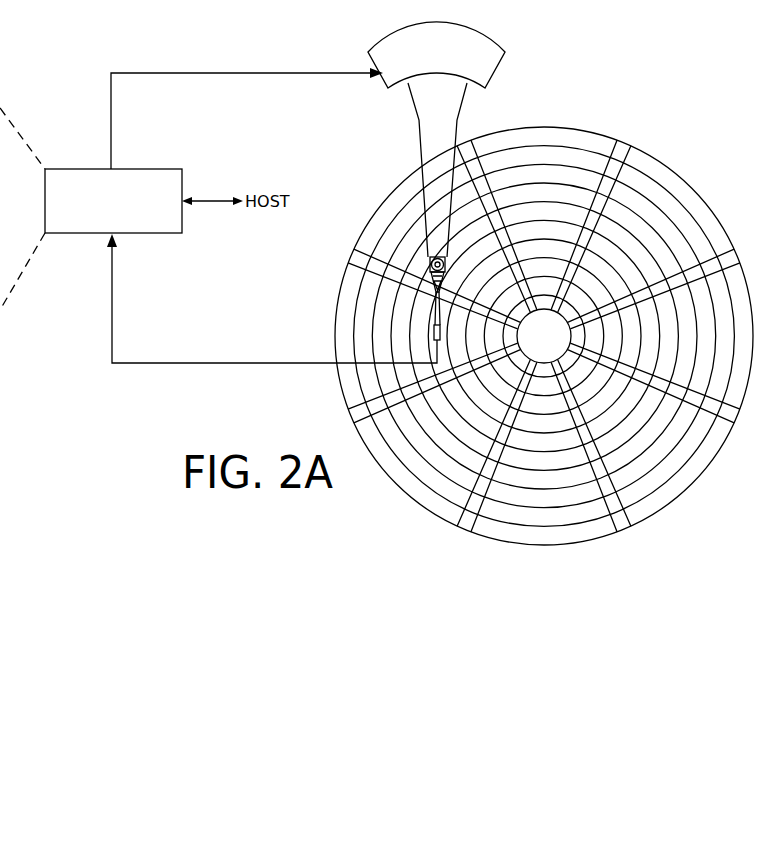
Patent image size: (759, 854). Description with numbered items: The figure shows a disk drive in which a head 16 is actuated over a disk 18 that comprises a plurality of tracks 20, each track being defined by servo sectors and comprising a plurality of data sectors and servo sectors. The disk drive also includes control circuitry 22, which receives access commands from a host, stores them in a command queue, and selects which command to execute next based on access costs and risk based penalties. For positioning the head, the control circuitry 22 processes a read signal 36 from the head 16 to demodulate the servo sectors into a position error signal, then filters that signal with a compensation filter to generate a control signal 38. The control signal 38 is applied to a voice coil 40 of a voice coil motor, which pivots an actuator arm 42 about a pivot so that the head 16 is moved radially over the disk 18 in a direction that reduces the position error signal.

The head 16 is at (424, 327).
The disk 18 is at (544, 313).
The tracks 20 is at (550, 158).
The control circuitry 22 is at (148, 168).
The read signal 36 is at (238, 363).
The control signal 38 is at (218, 73).
The voice coil 40 is at (383, 85).
The actuator arm 42 is at (420, 152).